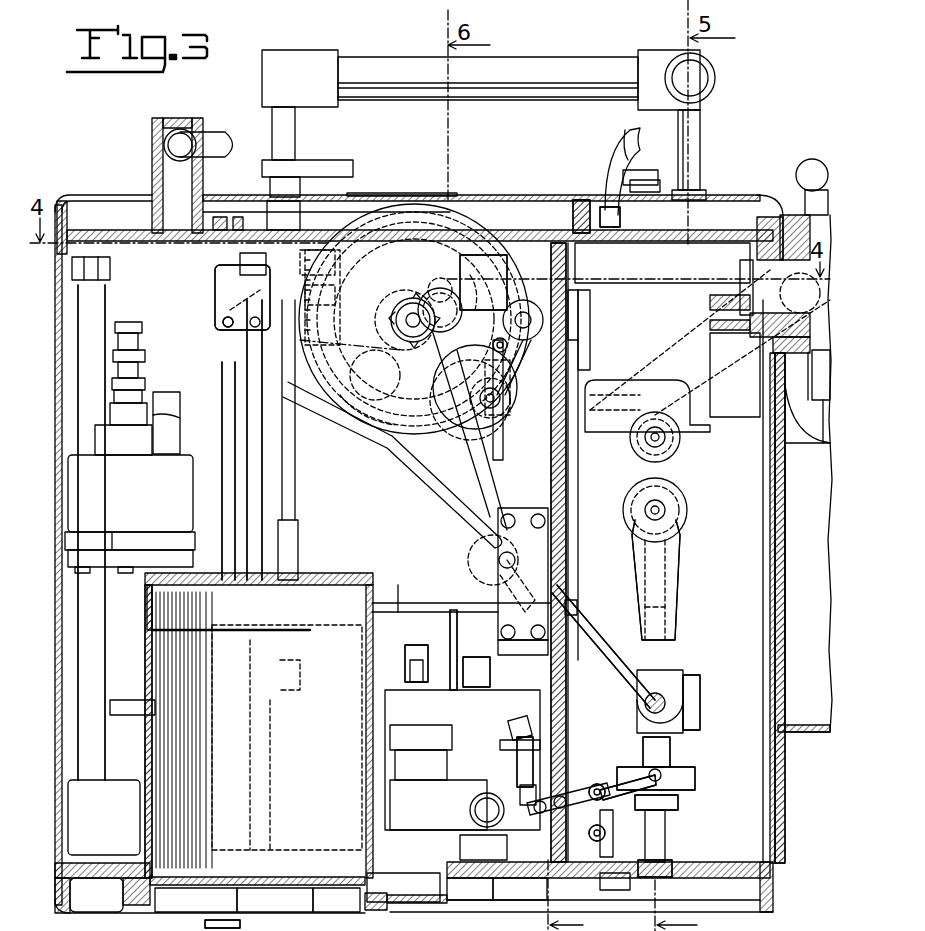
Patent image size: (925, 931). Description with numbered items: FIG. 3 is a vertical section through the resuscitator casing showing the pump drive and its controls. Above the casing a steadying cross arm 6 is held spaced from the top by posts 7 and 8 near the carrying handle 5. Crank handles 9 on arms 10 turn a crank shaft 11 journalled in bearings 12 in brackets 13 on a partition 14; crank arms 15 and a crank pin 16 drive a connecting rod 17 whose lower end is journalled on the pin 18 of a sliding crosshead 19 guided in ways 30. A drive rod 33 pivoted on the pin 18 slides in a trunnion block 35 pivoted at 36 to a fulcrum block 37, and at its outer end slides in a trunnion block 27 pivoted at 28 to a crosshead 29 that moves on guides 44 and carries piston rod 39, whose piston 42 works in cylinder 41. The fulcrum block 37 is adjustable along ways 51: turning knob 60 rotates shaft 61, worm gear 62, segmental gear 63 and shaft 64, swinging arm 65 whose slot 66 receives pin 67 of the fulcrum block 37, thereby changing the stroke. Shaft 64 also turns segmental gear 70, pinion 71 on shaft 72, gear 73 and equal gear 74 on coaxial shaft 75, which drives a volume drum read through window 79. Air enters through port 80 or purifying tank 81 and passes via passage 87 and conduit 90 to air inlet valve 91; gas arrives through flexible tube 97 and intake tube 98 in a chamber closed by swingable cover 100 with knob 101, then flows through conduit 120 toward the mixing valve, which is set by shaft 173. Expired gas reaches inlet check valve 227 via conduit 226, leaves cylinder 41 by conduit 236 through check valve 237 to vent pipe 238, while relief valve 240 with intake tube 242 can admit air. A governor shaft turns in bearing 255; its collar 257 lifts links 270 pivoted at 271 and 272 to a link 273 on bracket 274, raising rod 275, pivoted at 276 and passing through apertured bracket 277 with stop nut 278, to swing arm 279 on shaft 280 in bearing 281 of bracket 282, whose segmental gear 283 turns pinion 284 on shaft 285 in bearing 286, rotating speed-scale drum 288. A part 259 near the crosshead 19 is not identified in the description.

The carrying handle 5 is at (551, 62).
The steadying handle or cross arm 6 is at (700, 82).
The post 7 is at (286, 130).
The post 8 is at (701, 126).
The crank handle 9 is at (782, 290).
The arm 10 is at (725, 402).
The crank shaft 11 is at (665, 440).
The bearing 12 is at (678, 455).
The bracket 13 is at (605, 380).
The partition 14 is at (562, 232).
The crank arm 15 is at (672, 470).
The crank pin 16 is at (667, 512).
The connecting rod 17 is at (680, 580).
The pin 18 is at (663, 697).
The sliding crosshead 19 is at (690, 705).
The trunnion block 27 is at (215, 318).
The pivot 28 is at (222, 330).
The crosshead 29 is at (208, 300).
The ways 30 is at (668, 607).
The drive rod 33 is at (385, 440).
The trunnion block 35 is at (470, 578).
The pivot 36 is at (499, 560).
The fulcrum block 37 is at (483, 543).
The piston rod 39 is at (255, 432).
The cylinder 41 is at (152, 672).
The piston 42 is at (160, 622).
The guides 44 is at (222, 383).
The ways 51 is at (398, 585).
The knob 60 is at (346, 165).
The shaft 61 is at (330, 262).
The worm gear 62 is at (330, 297).
The segmental gear 63 is at (378, 392).
The shaft 64 is at (413, 305).
The arm 65 is at (462, 450).
The slot 66 is at (498, 508).
The pin 67 is at (515, 600).
The segmental gear 70 is at (495, 262).
The pinion 71 is at (497, 418).
The shaft 72 is at (500, 398).
The gear 73 is at (432, 395).
The gear 74 is at (385, 370).
The shaft 75 is at (398, 322).
The window 79 is at (422, 195).
The port 80 is at (712, 303).
The purifying tank 81 is at (788, 549).
The passage 87 is at (712, 320).
The conduit 90 is at (465, 660).
The air inlet valve 91 is at (410, 648).
The flexible tube 97 is at (620, 150).
The intake tube 98 is at (616, 227).
The swingable cover 100 is at (604, 208).
The handle or knob 101 is at (645, 180).
The conduit 120 is at (520, 348).
The shaft 173 is at (452, 650).
The conduit 226 is at (104, 300).
The inlet check valve 227 is at (112, 812).
The conduit 236 is at (417, 890).
The check valve 237 is at (415, 728).
The vent pipe 238 is at (478, 805).
The relief valve 240 is at (137, 498).
The intake tube 242 is at (165, 392).
The bearing 255 is at (662, 866).
The lowermost collar 257 is at (687, 802).
The block 259 is at (642, 745).
The links 270 is at (612, 765).
The pivot 271 is at (695, 778).
The pivot 272 is at (595, 783).
The link 273 is at (601, 836).
The bracket 274 is at (520, 790).
The rod 275 is at (500, 460).
The pivot 276 is at (527, 838).
The apertured bracket 277 is at (500, 744).
The stop nut 278 is at (512, 724).
The arm 279 is at (505, 378).
The shaft 280 is at (543, 320).
The bearing 281 is at (578, 303).
The bracket 282 is at (478, 250).
The segmental gear 283 is at (470, 272).
The pinion 284 is at (435, 278).
The shaft 285 is at (446, 312).
The bearing 286 is at (330, 312).
The drum 288 is at (394, 210).